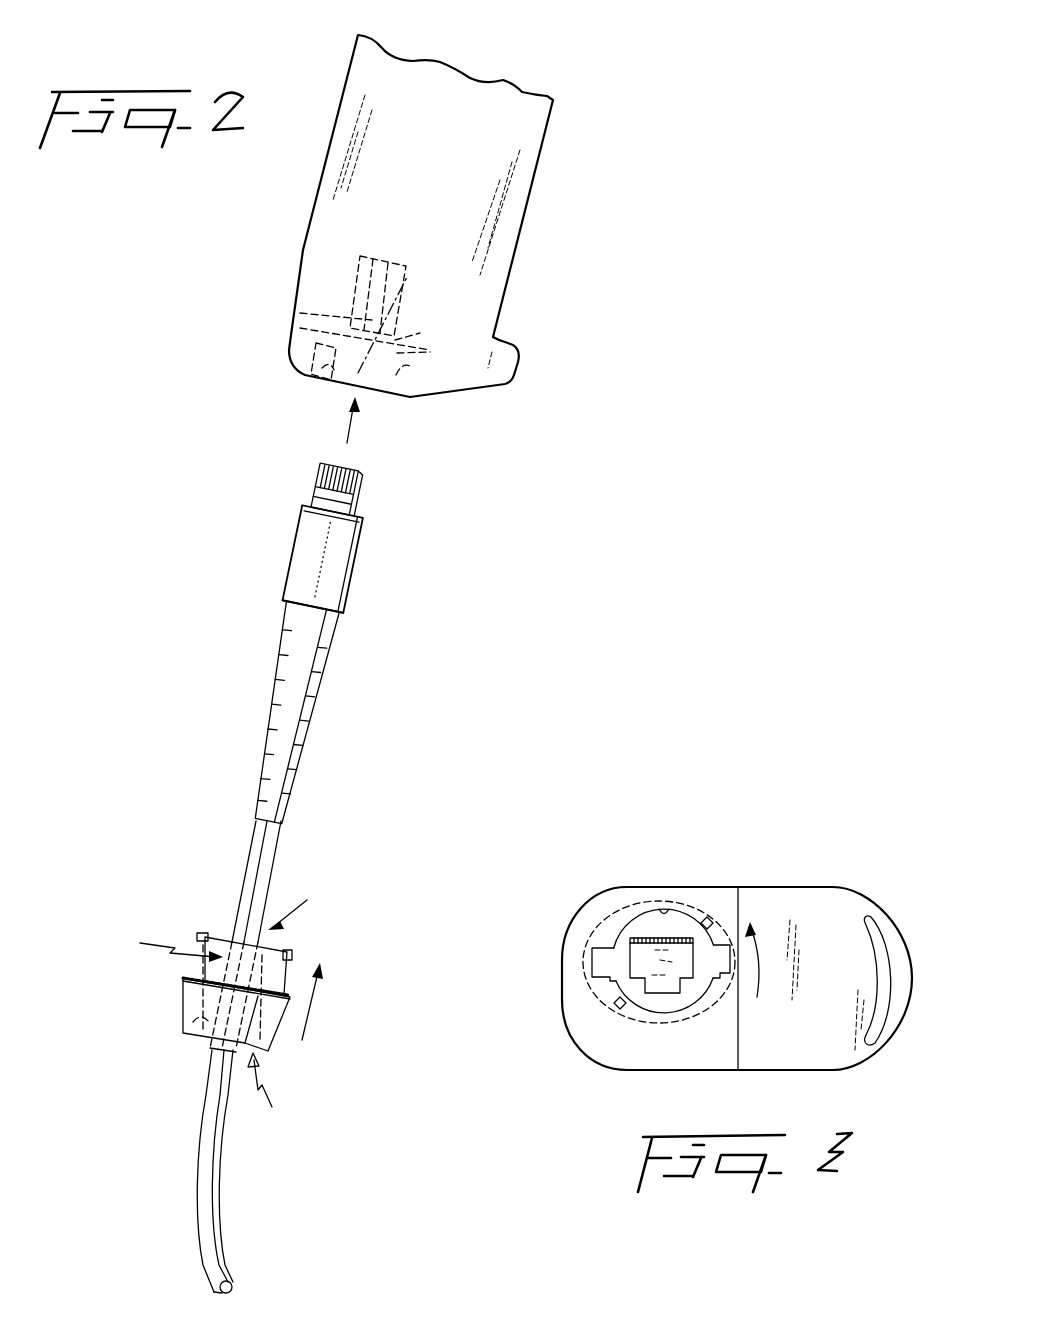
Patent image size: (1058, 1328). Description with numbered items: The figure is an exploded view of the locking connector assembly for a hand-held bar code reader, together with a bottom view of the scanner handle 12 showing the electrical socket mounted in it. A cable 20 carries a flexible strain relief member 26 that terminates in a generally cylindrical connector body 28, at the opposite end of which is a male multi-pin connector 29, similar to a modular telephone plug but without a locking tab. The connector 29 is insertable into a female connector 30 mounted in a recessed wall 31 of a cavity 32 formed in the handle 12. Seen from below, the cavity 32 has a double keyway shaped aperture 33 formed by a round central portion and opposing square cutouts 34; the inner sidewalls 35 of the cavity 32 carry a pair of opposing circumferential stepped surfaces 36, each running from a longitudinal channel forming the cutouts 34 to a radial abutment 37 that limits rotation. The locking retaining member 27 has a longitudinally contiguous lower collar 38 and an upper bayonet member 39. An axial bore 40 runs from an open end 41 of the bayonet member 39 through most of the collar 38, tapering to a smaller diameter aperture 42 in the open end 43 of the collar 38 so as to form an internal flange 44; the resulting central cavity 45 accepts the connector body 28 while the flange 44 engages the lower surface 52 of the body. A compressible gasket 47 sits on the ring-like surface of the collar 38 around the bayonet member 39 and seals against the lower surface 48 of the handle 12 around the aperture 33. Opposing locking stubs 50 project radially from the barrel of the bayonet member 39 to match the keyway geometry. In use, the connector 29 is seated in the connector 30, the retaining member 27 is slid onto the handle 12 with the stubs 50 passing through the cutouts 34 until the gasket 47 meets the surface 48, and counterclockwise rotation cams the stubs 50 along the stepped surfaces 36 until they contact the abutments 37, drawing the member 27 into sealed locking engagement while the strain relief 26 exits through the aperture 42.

In FIG. 2, the scanner handle 12 is at (542, 212).
In FIG. 2, the cable 20 is at (263, 848).
In FIG. 2, the flexible strain relief member 26 is at (292, 748).
In FIG. 2, the locking retaining member 27 is at (226, 978).
In FIG. 2, the connector body 28 is at (345, 565).
In FIG. 2, the male multi-pin connector 29 is at (362, 478).
In FIG. 2, the female connector 30 is at (350, 293).
In FIG. 3, the female connector 30 is at (643, 955).
In FIG. 2, the recessed wall 31 is at (300, 313).
In FIG. 2, the cavity 32 is at (327, 382).
In FIG. 3, the cavity 32 is at (637, 927).
In FIG. 3, the double keyway shaped aperture 33 is at (667, 908).
In FIG. 3, the square cutouts 34 is at (723, 953).
In FIG. 2, the inner sidewalls 35 is at (397, 377).
In FIG. 2, the circumferential stepped surfaces 36 is at (430, 352).
In FIG. 2, the radial abutment 37 is at (300, 328).
In FIG. 3, the radial abutment 37 is at (708, 920).
In FIG. 2, the lower collar 38 is at (267, 1045).
In FIG. 2, the upper bayonet member 39 is at (262, 955).
In FIG. 2, the axial bore 40 is at (230, 933).
In FIG. 2, the open end 41 is at (304, 905).
In FIG. 2, the smaller diameter aperture 42 is at (213, 1047).
In FIG. 2, the open end 43 is at (270, 1094).
In FIG. 2, the internal flange 44 is at (178, 1025).
In FIG. 2, the central cavity 45 is at (166, 942).
In FIG. 2, the gasket 47 is at (183, 977).
In FIG. 2, the lower surface 48 is at (413, 400).
In FIG. 3, the lower surface 48 is at (633, 1022).
In FIG. 2, the locking stubs 50 is at (202, 935).
In FIG. 2, the lower surface 52 is at (340, 613).